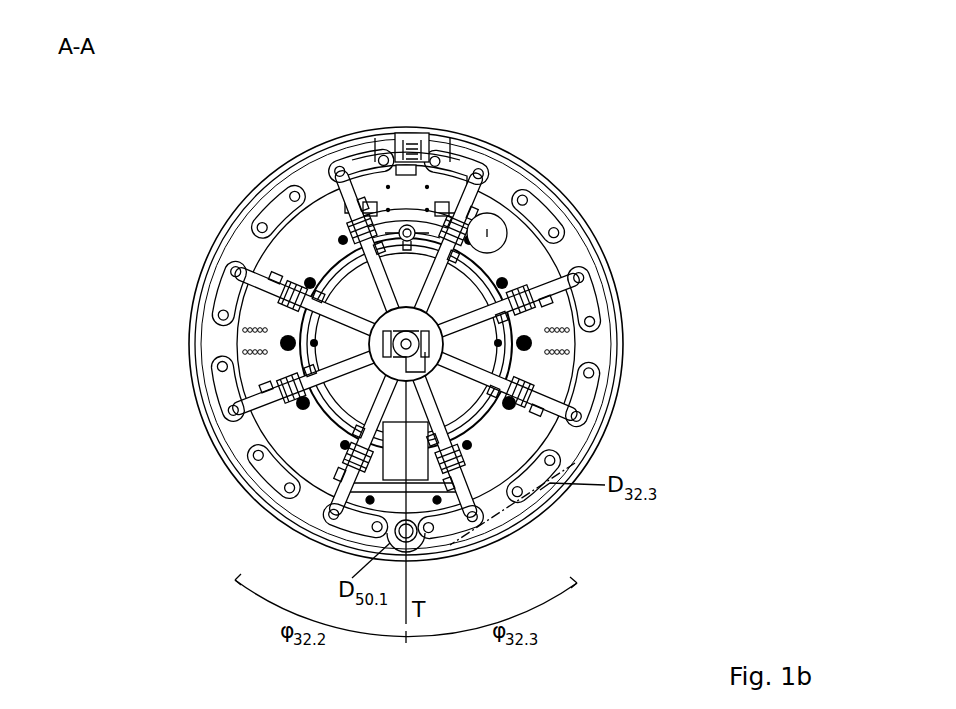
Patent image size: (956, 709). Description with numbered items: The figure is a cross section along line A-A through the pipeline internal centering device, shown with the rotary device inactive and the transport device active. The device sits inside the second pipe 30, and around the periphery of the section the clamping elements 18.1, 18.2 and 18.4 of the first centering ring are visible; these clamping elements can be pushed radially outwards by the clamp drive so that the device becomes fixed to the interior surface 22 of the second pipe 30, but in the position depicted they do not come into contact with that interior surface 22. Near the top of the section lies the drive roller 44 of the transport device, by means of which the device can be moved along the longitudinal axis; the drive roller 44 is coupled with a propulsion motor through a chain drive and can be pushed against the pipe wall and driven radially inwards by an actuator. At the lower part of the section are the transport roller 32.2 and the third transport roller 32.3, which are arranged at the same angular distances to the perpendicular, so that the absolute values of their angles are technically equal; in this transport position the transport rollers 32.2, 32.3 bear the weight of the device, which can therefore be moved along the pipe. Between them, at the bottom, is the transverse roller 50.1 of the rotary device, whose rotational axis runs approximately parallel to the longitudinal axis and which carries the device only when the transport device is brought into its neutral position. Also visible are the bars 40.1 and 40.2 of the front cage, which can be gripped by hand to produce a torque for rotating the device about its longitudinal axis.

The drive roller 44 is at (383, 138).
The clamping element 18.1 is at (456, 162).
The bar 40.1 is at (480, 163).
The clamping element 18.2 is at (537, 210).
The interior surface 22 is at (233, 233).
The second pipe 30 is at (615, 282).
The clamping element 18.4 is at (588, 390).
The third transport roller 32.3 is at (537, 515).
The transport roller 32.2 is at (287, 507).
The bar 40.2 is at (488, 521).
The transverse roller 50.1 is at (421, 548).